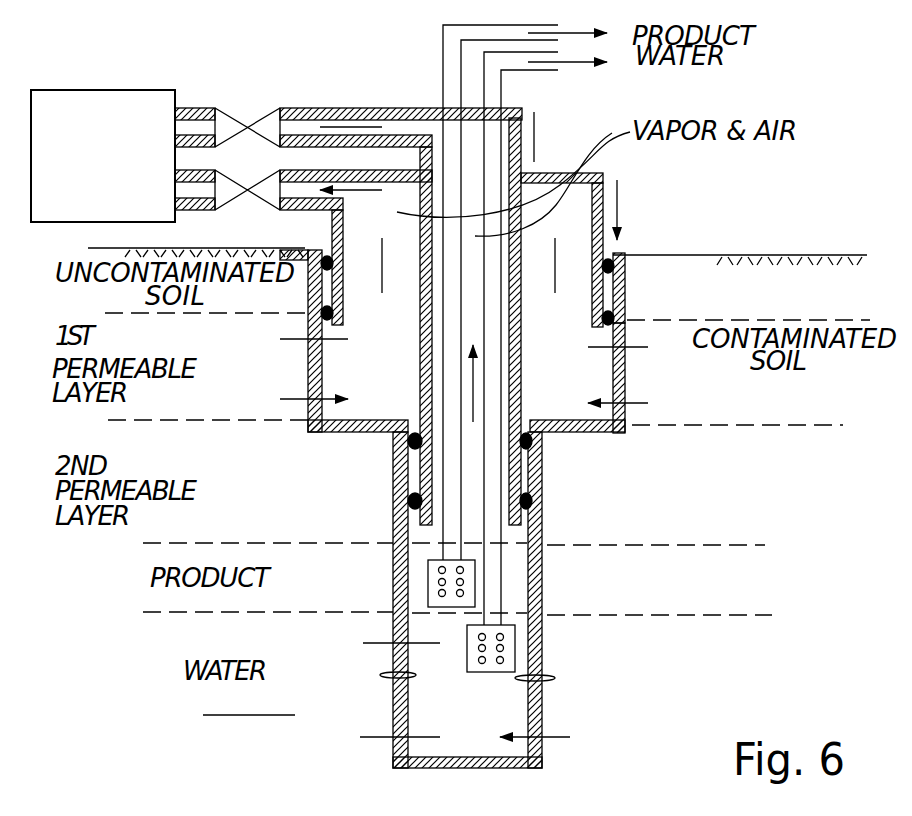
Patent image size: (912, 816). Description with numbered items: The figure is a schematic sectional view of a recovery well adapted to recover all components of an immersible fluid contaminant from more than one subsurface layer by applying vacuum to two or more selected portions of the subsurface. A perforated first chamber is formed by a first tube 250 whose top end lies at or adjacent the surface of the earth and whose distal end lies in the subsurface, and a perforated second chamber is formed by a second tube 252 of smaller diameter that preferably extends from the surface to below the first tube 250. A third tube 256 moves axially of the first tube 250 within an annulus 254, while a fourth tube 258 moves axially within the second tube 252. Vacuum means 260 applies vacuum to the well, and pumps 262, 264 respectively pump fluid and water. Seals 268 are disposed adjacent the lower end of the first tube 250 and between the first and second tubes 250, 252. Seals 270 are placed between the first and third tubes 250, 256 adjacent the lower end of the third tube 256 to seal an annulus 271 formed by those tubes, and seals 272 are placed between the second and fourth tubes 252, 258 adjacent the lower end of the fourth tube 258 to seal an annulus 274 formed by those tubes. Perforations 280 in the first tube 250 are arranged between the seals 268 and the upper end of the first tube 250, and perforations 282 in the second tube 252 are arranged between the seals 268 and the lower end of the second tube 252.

The first tube 250 is at (628, 358).
The second tube 252 is at (542, 757).
The annulus 254 is at (348, 378).
The third tube 256 is at (578, 174).
The fourth tube 258 is at (408, 458).
The vacuum means 260 is at (86, 90).
The product pump 262 is at (428, 582).
The water pump 264 is at (515, 643).
The seals 268 is at (536, 445).
The seals 270 is at (618, 270).
The annulus 271 is at (626, 291).
The seals 272 is at (536, 498).
The annulus 274 is at (521, 470).
The perforations 280 is at (628, 376).
The perforations 282 is at (405, 495).